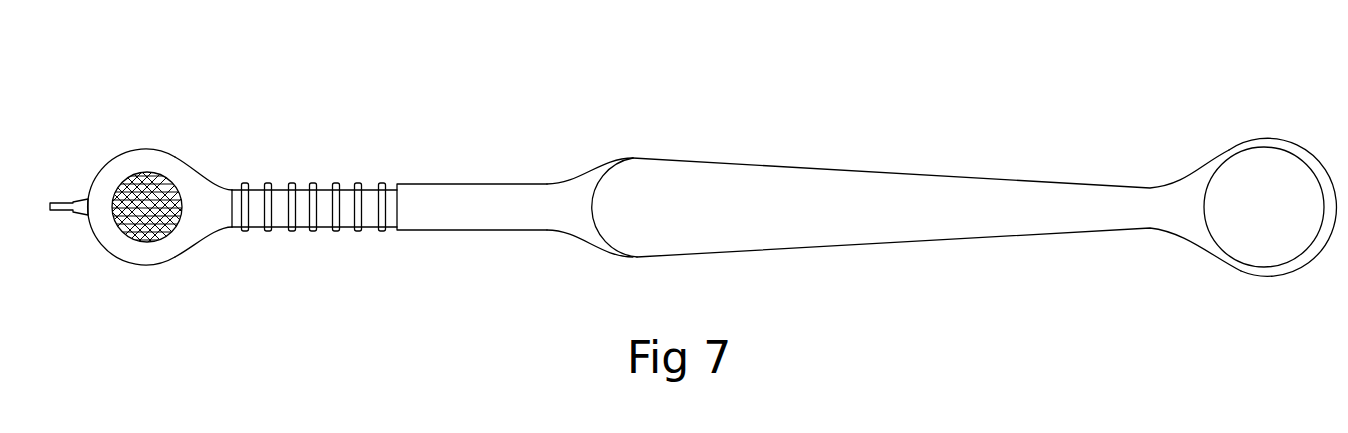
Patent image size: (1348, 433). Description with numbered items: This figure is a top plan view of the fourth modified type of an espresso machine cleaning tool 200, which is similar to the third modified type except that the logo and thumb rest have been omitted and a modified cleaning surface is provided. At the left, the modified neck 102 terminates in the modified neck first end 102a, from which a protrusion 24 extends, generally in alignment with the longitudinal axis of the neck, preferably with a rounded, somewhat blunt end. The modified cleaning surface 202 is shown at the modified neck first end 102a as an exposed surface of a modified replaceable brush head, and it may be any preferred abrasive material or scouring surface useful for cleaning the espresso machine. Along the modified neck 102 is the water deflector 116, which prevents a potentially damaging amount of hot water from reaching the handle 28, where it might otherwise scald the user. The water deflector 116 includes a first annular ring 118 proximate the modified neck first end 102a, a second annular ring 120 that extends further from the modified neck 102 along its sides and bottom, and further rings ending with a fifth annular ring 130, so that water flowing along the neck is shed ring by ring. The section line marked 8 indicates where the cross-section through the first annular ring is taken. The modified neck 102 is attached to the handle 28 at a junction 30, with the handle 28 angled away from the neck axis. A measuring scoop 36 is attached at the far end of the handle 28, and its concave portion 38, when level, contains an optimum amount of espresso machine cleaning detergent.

The protrusion 24 is at (61, 203).
The modified cleaning surface 202 is at (148, 195).
The modified neck first end 102a is at (147, 267).
The section line 8 is at (265, 170).
The water deflector means 116 is at (320, 165).
The first annular ring 118 is at (247, 231).
The second annular ring 120 is at (273, 185).
The fifth annular ring 130 is at (382, 230).
The modified neck 102 is at (426, 242).
The fourth modified type of an espresso machine cleaning tool 200 is at (551, 121).
The junction 30 is at (592, 185).
The handle 28 is at (1063, 156).
The measuring scoop 36 is at (1258, 283).
The concave portion 38 is at (1270, 185).